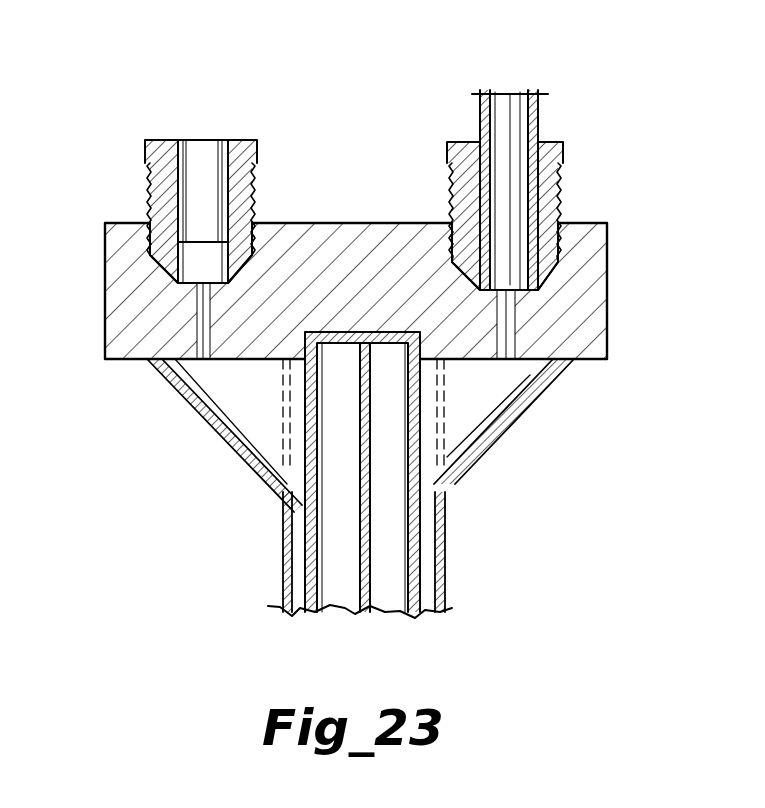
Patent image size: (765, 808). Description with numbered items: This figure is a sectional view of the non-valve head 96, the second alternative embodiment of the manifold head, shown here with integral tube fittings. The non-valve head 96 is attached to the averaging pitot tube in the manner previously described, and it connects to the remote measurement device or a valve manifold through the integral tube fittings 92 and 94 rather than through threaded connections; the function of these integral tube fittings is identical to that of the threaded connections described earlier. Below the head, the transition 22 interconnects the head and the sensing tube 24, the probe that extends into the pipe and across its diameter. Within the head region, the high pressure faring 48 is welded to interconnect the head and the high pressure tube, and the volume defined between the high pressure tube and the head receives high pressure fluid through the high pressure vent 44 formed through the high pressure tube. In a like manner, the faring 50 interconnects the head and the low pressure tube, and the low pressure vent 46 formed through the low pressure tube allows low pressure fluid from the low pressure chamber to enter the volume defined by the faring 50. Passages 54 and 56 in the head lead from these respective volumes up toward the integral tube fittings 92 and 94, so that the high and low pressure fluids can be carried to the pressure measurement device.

The transition 22 is at (425, 551).
The sensing tube 24 is at (445, 590).
The high pressure vent 44 is at (306, 455).
The low pressure vent 46 is at (462, 470).
The high pressure faring 48 is at (193, 402).
The faring 50 is at (527, 410).
The passage 54 is at (178, 325).
The passage 56 is at (510, 333).
The integral tube fitting 92 is at (172, 268).
The integral tube fitting 94 is at (240, 196).
The non-valve head 96 is at (607, 325).